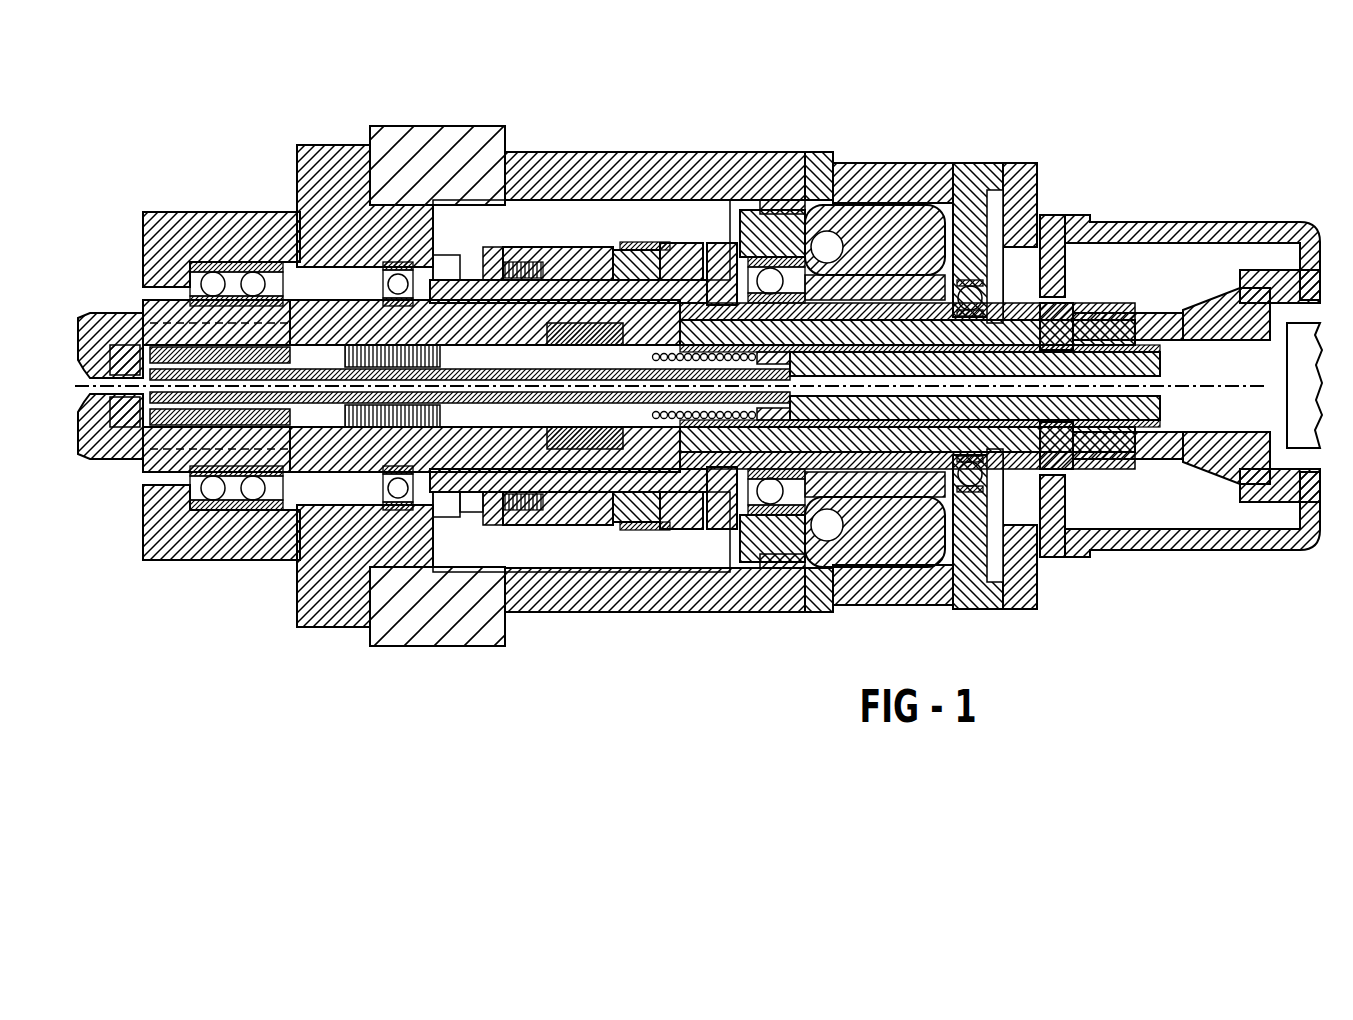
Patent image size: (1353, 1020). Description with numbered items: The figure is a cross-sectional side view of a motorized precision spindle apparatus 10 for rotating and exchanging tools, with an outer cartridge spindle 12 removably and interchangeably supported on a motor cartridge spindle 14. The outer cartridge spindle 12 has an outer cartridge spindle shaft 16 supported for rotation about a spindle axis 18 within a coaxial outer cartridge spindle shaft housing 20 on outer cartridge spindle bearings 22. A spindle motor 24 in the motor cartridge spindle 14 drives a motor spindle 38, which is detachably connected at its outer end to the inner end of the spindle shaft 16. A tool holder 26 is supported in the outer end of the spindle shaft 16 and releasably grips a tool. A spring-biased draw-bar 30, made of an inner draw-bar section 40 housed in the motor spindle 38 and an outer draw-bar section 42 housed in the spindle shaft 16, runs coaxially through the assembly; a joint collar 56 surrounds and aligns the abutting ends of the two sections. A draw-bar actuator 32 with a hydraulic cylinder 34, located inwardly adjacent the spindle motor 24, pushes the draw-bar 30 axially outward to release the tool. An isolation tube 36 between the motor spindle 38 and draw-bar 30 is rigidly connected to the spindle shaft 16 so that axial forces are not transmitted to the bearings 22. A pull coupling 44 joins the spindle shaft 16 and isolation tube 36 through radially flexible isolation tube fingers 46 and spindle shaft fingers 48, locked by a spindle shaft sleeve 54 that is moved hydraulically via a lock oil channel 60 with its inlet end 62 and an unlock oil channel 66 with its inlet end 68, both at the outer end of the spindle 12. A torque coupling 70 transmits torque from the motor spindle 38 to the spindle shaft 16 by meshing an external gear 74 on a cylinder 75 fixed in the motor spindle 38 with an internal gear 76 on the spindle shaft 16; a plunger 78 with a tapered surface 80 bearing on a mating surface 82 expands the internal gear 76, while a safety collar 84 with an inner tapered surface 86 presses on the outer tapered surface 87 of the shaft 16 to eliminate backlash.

The motorized precision spindle apparatus 10 is at (1062, 152).
The outer cartridge spindle 12 is at (323, 142).
The motor cartridge spindle 14 is at (874, 150).
The outer cartridge spindle shaft 16 is at (300, 265).
The spindle axis 18 is at (83, 462).
The outer cartridge spindle shaft housing 20 is at (181, 212).
The outer cartridge spindle bearings 22 is at (253, 271).
The spindle motor 24 is at (888, 215).
The tool holder 26 is at (97, 318).
The draw-bar 30 is at (358, 458).
The draw-bar actuator 32 is at (1176, 275).
The hydraulic cylinder 34 is at (1290, 270).
The isolation tube 36 is at (969, 358).
The motor spindle 38 is at (952, 165).
The inner draw-bar section 40 is at (1096, 330).
The outer draw-bar section 42 is at (372, 407).
The pull coupling 44 is at (554, 250).
The isolation tube fingers 46 is at (652, 256).
The spindle shaft fingers 48 is at (624, 280).
The spindle shaft sleeve 54 is at (568, 349).
The joint collar 56 is at (536, 516).
The hydraulic lock oil channel 60 is at (456, 480).
The lock channel inlet end 62 is at (128, 458).
The hydraulic unlock oil channel 66 is at (460, 292).
The unlock channel inlet end 68 is at (134, 318).
The torque coupling 70 is at (706, 300).
The external gear 74 is at (772, 386).
The cylinder 75 is at (840, 240).
The internal gear 76 is at (700, 247).
The plunger 78 is at (660, 282).
The tapered frusto-conical surface 80 is at (683, 506).
The mating surface 82 is at (645, 512).
The safety collar 84 is at (546, 247).
The inner circumferential tapered frusto-conical surface 86 is at (718, 470).
The outer circumferential tapered frusto-conical surface 87 is at (697, 470).